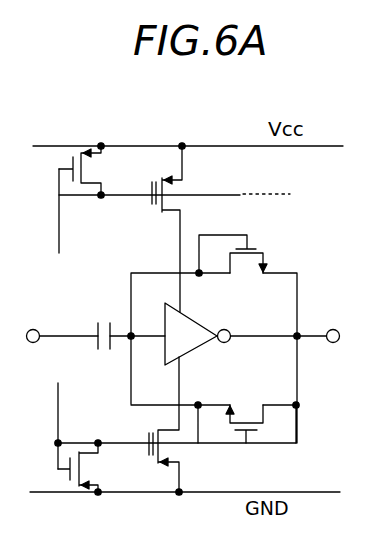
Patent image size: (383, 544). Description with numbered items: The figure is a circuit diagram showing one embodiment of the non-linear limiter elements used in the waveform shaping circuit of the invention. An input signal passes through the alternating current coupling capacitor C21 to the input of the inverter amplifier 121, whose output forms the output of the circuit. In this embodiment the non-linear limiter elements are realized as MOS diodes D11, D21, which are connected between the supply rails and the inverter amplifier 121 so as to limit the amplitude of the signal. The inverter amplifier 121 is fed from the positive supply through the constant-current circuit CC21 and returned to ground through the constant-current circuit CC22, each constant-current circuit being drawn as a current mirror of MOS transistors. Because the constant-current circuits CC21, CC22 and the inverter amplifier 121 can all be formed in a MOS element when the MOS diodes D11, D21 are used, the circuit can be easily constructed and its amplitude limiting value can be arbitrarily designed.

The constant-current circuit CC21 is at (163, 212).
The constant-current circuit CC22 is at (158, 430).
The alternating current coupling capacitor C21 is at (97, 322).
The inverter amplifier 121 is at (203, 327).
The MOS diode D11 is at (256, 249).
The MOS diode D21 is at (261, 408).